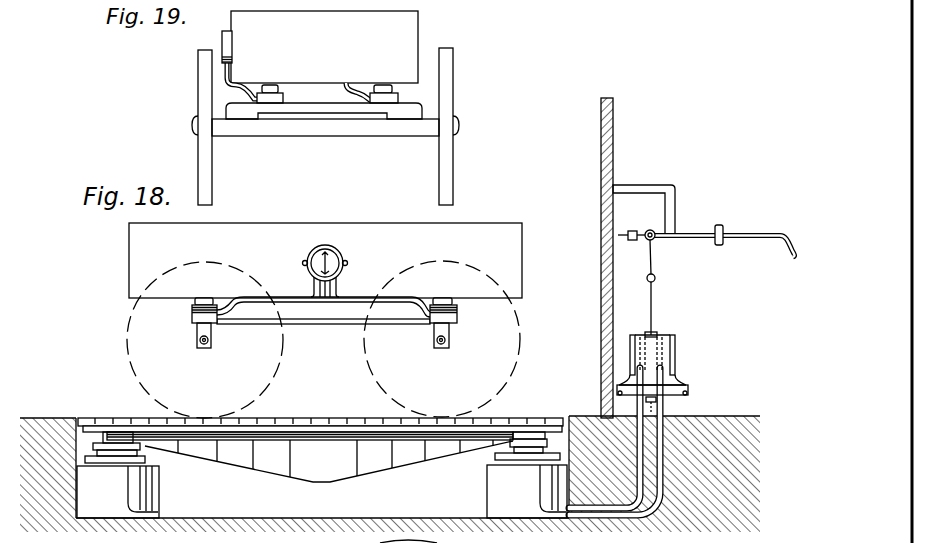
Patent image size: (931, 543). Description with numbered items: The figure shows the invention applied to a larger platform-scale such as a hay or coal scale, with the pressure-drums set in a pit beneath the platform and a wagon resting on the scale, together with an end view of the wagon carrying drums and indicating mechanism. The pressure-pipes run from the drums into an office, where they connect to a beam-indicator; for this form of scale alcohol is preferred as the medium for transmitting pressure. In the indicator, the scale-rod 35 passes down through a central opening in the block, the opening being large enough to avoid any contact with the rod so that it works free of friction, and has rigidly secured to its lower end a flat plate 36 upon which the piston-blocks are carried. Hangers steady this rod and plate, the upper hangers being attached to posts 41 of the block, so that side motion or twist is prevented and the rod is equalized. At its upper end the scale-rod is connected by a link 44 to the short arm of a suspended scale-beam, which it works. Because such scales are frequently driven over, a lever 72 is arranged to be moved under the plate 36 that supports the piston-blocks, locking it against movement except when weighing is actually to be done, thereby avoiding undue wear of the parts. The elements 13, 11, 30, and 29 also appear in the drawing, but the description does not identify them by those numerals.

The hand lever 13 is at (706, 231).
The link 44 is at (653, 258).
The scale-rod 35 is at (655, 321).
The cylinder 11 is at (631, 349).
The posts 41 is at (676, 355).
The valve casing 30 is at (650, 372).
The flange 29 is at (617, 380).
The lever 72 is at (640, 406).
The flat plate 36 is at (667, 395).